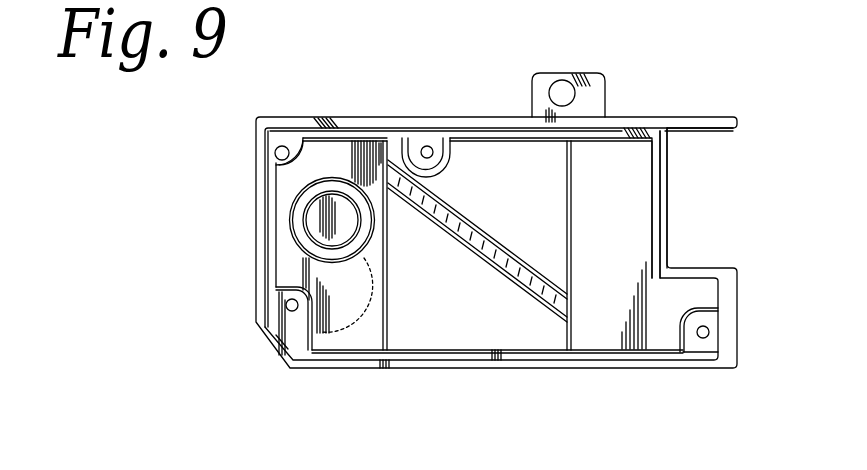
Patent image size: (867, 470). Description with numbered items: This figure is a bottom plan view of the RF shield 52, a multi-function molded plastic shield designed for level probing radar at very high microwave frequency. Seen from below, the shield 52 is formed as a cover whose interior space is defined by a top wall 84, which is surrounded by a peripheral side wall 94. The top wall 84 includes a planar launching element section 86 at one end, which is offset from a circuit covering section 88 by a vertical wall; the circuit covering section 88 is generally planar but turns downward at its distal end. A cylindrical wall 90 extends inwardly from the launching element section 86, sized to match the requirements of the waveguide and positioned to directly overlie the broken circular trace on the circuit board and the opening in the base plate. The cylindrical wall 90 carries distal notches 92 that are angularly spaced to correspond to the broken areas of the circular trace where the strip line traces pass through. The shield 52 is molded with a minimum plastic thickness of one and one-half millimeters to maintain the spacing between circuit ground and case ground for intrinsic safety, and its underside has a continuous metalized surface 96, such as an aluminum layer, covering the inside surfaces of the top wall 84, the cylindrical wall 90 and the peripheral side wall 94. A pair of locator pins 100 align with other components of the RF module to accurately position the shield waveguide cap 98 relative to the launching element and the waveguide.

The RF shield 52 is at (492, 101).
The top wall 84 is at (625, 186).
The launching element section 86 is at (332, 150).
The circuit covering section 88 is at (548, 187).
The cylindrical wall 90 is at (303, 230).
The distal notches 92 is at (360, 143).
The peripheral side wall 94 is at (424, 145).
The metalized surface 96 is at (550, 250).
The shield waveguide cap 98 is at (293, 219).
The locator pins 100 is at (445, 138).